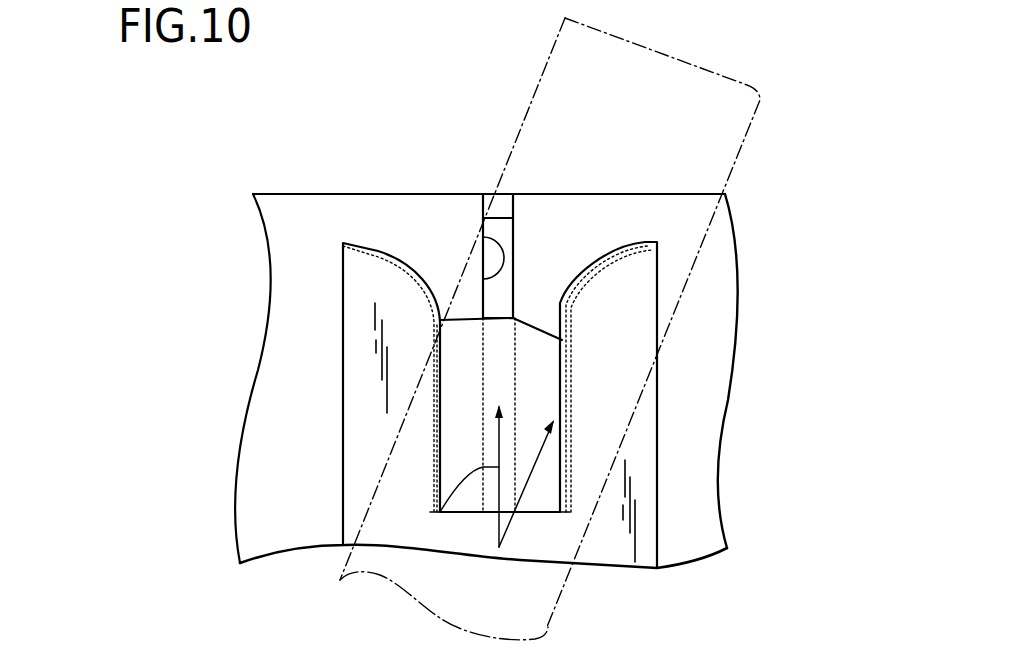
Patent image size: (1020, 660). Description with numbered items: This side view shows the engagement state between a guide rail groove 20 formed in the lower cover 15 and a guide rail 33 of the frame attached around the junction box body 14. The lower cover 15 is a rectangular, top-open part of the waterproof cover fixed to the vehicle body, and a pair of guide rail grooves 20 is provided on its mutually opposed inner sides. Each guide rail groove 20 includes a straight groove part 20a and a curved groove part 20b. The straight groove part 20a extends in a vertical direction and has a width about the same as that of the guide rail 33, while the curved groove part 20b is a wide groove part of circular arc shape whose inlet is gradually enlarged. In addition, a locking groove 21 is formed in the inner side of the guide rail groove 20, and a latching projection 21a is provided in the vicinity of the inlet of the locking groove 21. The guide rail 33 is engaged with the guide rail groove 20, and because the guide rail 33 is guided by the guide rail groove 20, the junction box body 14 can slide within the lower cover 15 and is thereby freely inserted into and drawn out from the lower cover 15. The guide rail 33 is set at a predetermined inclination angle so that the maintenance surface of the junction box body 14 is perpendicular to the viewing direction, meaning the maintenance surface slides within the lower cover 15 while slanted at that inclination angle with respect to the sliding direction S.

The junction box body 14 is at (745, 142).
The lower cover 15 is at (693, 490).
The guide rail groove 20 is at (381, 405).
The straight groove part 20a is at (440, 421).
The curved groove part 20b is at (427, 272).
The locking groove 21 is at (483, 235).
The latching projection 21a is at (507, 193).
The guide rail 33 is at (540, 385).
The sliding direction S is at (442, 507).